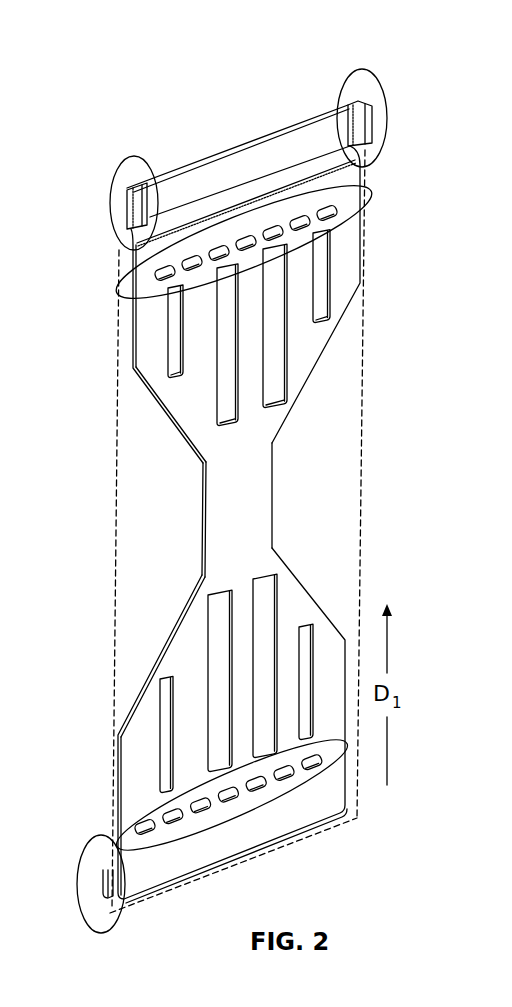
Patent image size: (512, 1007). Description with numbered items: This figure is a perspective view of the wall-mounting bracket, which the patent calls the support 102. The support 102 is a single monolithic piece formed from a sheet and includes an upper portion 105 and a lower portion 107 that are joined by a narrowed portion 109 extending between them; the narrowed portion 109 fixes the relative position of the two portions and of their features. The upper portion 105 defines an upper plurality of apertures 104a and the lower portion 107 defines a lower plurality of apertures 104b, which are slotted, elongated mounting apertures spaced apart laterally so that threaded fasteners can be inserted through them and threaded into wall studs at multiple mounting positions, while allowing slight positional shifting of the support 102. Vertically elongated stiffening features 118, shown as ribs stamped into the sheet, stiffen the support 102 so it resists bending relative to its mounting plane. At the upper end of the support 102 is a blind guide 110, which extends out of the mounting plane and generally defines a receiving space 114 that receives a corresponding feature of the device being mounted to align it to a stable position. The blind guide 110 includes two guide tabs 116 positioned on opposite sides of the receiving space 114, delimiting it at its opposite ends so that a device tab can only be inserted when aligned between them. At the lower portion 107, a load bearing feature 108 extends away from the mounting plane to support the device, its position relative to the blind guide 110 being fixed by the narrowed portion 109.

The support 102 is at (386, 234).
The upper plurality of apertures 104a is at (293, 244).
The lower plurality of apertures 104b is at (287, 796).
The upper portion 105 is at (394, 71).
The lower portion 107 is at (364, 850).
The load bearing feature 108 is at (103, 865).
The narrowed portion 109 is at (254, 470).
The blind guide 110 is at (183, 168).
The receiving space 114 is at (240, 157).
The guide tabs 116 is at (132, 160).
The stiffening features 118 is at (168, 363).